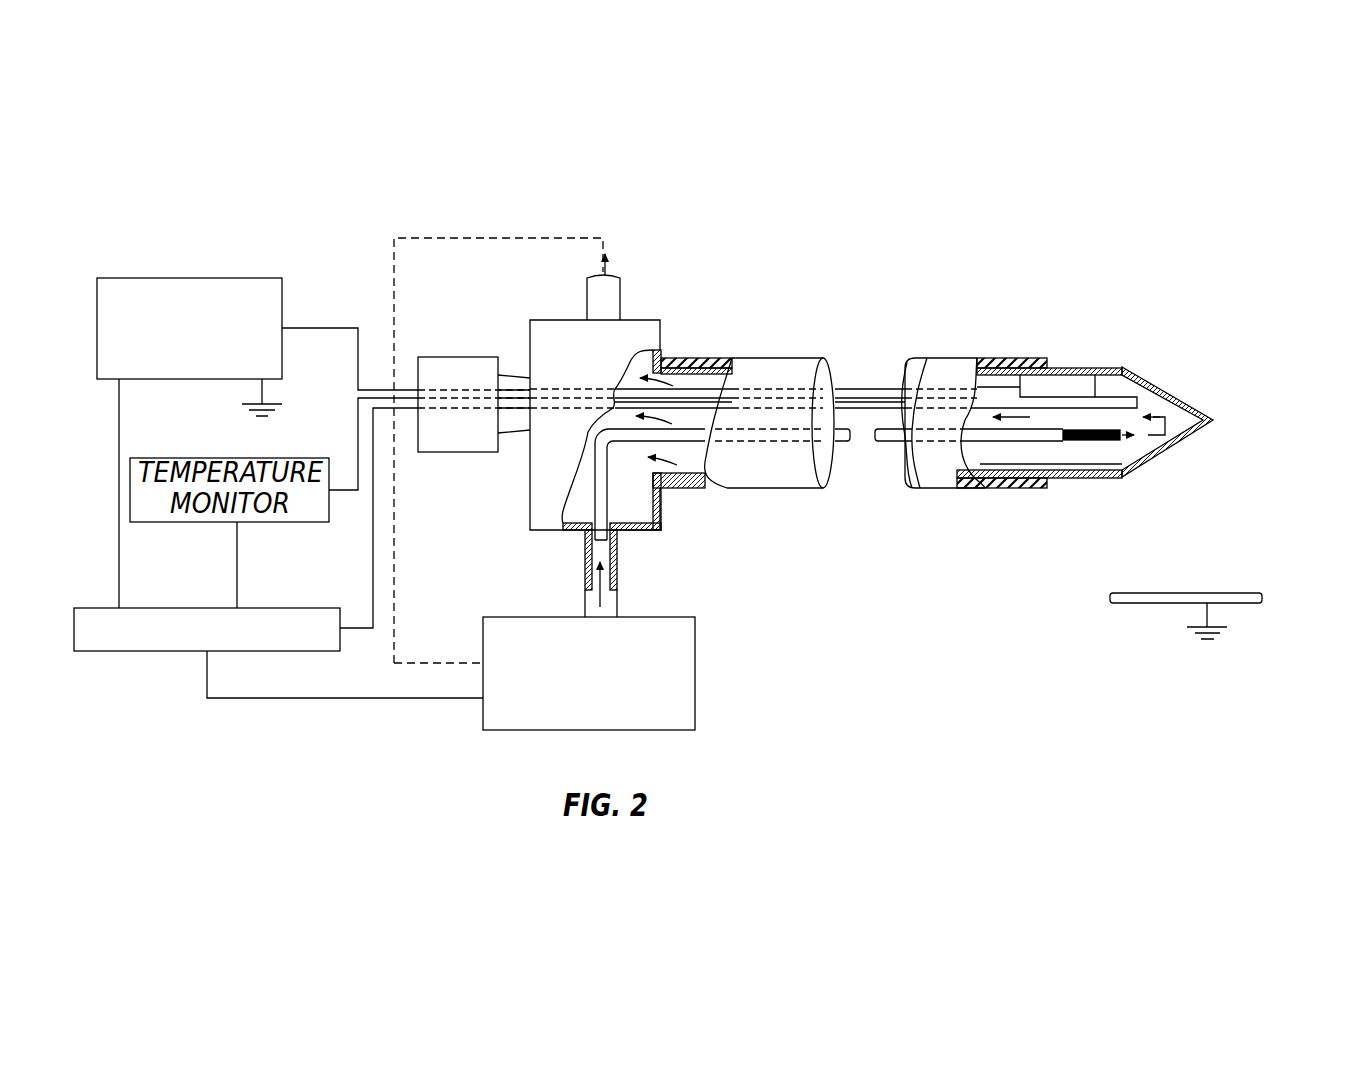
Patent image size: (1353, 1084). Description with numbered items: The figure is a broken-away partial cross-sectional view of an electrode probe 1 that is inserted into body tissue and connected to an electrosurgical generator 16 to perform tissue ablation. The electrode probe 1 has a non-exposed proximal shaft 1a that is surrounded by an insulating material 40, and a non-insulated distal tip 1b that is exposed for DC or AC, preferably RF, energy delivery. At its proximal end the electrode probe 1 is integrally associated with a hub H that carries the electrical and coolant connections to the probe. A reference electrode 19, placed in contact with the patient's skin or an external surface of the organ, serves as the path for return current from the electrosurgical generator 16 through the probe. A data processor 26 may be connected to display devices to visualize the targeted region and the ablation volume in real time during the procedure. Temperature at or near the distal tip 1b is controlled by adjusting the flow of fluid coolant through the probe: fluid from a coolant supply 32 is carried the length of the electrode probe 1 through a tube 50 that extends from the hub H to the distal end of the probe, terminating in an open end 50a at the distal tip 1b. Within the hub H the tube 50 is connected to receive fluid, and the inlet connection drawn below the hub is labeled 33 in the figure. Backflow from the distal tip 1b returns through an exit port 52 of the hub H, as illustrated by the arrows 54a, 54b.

The electrosurgical generator 16 is at (190, 278).
The data processor 26 is at (207, 608).
The coolant supply 32 is at (702, 663).
The coolant inlet tube 33 is at (607, 583).
The exit port 52 is at (588, 285).
The arrow 54b is at (612, 268).
The arrow 54a is at (700, 468).
The hub H is at (647, 310).
The electrode probe 1 is at (908, 344).
The non-exposed proximal shaft 1a is at (1010, 358).
The insulating material 40 is at (1027, 362).
The non-insulated distal tip 1b is at (1213, 422).
The tube 50 is at (975, 488).
The open end 50a is at (1110, 442).
The reference electrode 19 is at (1262, 598).